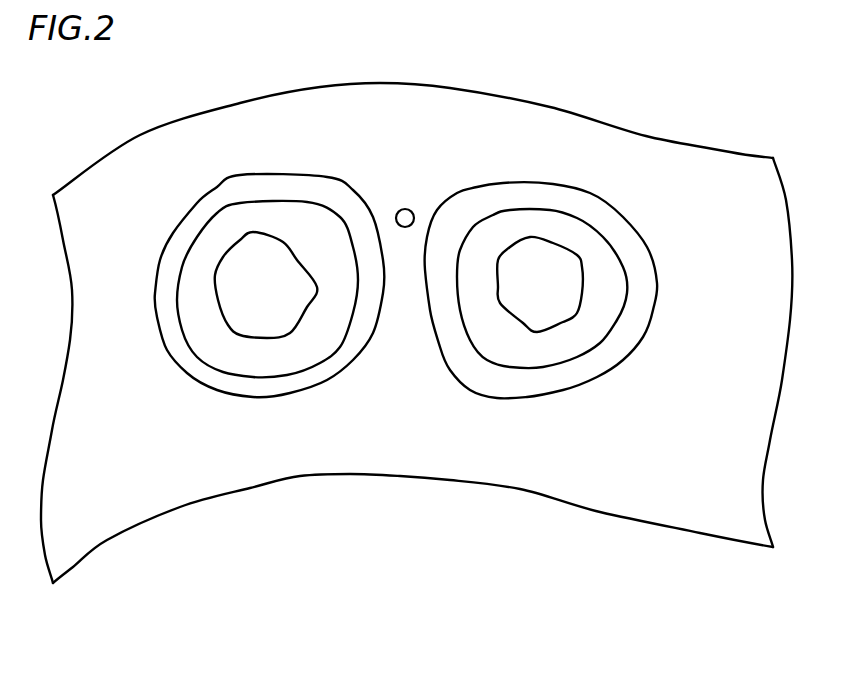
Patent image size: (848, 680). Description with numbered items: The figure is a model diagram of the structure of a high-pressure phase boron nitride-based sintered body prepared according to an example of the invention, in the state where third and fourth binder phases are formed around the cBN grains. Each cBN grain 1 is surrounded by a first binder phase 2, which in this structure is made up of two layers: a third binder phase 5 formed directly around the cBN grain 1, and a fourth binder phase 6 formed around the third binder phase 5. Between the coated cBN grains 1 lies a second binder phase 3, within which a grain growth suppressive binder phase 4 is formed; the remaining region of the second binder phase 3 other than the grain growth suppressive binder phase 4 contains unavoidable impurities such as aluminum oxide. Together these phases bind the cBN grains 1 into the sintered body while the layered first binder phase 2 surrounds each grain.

The cBN grain 1 is at (276, 315).
The first binder phase 2 is at (170, 600).
The second binder phase 3 is at (397, 420).
The grain growth suppressive binder phase 4 is at (404, 209).
The third binder phase 5 is at (232, 352).
The fourth binder phase 6 is at (187, 360).